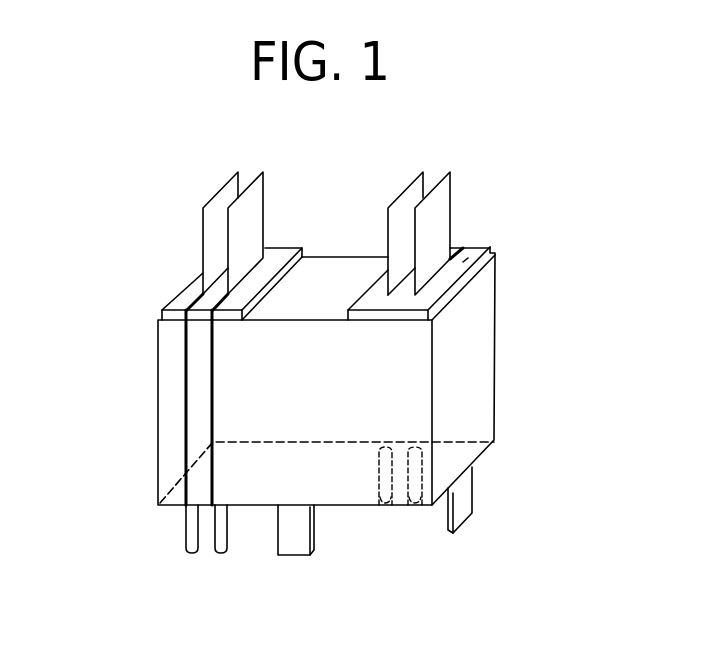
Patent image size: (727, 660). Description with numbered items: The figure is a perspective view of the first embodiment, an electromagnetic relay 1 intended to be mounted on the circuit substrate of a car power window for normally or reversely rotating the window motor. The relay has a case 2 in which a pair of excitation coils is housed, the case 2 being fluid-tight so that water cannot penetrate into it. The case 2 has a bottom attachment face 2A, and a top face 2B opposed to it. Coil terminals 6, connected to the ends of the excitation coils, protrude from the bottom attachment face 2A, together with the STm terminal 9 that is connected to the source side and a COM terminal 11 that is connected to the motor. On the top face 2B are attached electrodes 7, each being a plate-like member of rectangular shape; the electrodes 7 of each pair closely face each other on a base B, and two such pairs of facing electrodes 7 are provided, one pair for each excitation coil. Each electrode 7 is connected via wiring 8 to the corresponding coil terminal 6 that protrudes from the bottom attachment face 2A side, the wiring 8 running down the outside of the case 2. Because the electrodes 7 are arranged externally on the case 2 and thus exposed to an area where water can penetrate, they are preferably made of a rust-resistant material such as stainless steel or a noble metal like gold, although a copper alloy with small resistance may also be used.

The electromagnetic relay 1 is at (352, 267).
The case 2 is at (172, 365).
The bottom attachment face 2A is at (445, 452).
The top face 2B is at (308, 277).
The coil terminals 6 is at (192, 555).
The electrodes 7 is at (218, 227).
The wiring 8 is at (185, 423).
The STm terminal 9 is at (292, 545).
The COM terminal 11 is at (460, 503).
The base B is at (452, 270).